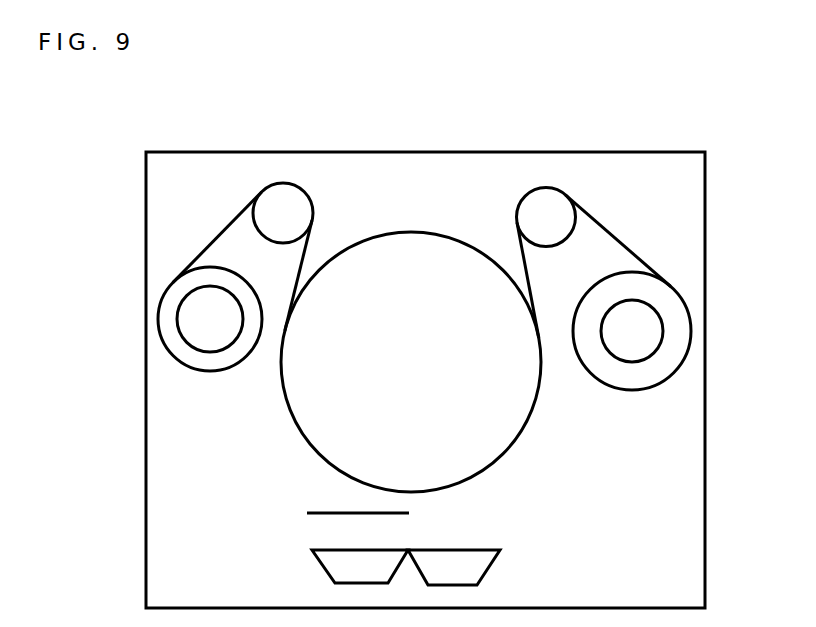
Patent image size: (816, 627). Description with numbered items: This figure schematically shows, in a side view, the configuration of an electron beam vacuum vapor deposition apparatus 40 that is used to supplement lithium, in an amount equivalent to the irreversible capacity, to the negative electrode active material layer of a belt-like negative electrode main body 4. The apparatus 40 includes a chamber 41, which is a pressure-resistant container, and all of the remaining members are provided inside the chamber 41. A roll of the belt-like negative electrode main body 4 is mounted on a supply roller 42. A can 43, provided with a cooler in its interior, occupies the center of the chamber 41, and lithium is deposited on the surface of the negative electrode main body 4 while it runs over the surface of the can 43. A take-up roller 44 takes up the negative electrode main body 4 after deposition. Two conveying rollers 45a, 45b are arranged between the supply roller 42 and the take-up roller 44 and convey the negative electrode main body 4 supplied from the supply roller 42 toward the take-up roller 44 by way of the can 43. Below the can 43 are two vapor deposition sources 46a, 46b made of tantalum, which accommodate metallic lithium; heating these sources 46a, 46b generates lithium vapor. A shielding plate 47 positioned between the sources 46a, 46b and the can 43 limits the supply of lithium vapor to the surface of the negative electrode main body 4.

The vapor deposition apparatus 40 is at (187, 121).
The chamber 41 is at (372, 152).
The supply roller 42 is at (637, 347).
The can 43 is at (397, 303).
The take-up roller 44 is at (210, 330).
The conveying roller 45a is at (550, 210).
The conveying roller 45b is at (292, 213).
The negative electrode main body 4 is at (628, 246).
The vapor deposition source 46a is at (483, 567).
The vapor deposition source 46b is at (332, 570).
The shielding plate 47 is at (325, 513).